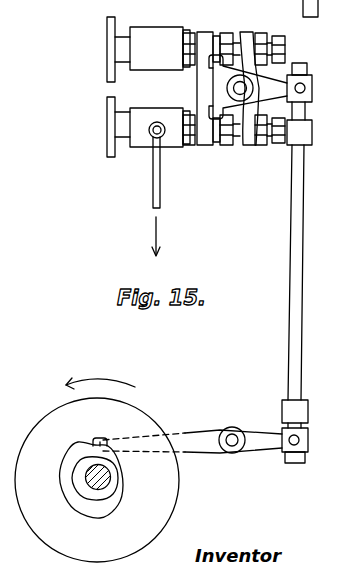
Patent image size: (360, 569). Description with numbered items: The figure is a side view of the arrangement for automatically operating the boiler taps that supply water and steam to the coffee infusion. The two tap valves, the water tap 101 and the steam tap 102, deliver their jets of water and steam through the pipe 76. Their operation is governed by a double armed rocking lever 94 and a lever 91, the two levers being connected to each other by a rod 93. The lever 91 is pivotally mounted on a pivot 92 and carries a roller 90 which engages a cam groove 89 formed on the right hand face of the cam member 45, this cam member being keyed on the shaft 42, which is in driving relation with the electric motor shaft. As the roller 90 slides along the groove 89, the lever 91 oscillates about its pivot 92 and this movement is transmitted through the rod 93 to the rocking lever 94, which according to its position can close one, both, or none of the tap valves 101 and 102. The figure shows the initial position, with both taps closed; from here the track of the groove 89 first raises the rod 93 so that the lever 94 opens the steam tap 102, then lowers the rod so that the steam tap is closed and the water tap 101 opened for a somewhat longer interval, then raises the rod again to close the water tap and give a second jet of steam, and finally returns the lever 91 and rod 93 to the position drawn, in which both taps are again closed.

The steam tap 102 is at (148, 49).
The water tap 101 is at (142, 140).
The pipe 76 is at (161, 183).
The double armed rocking lever 94 is at (247, 38).
The rod 93 is at (291, 253).
The lever 91 is at (210, 448).
The pivot 92 is at (235, 429).
The cam member 45 is at (97, 470).
The cam groove 89 is at (123, 485).
The roller 90 is at (100, 440).
The shaft 42 is at (86, 472).